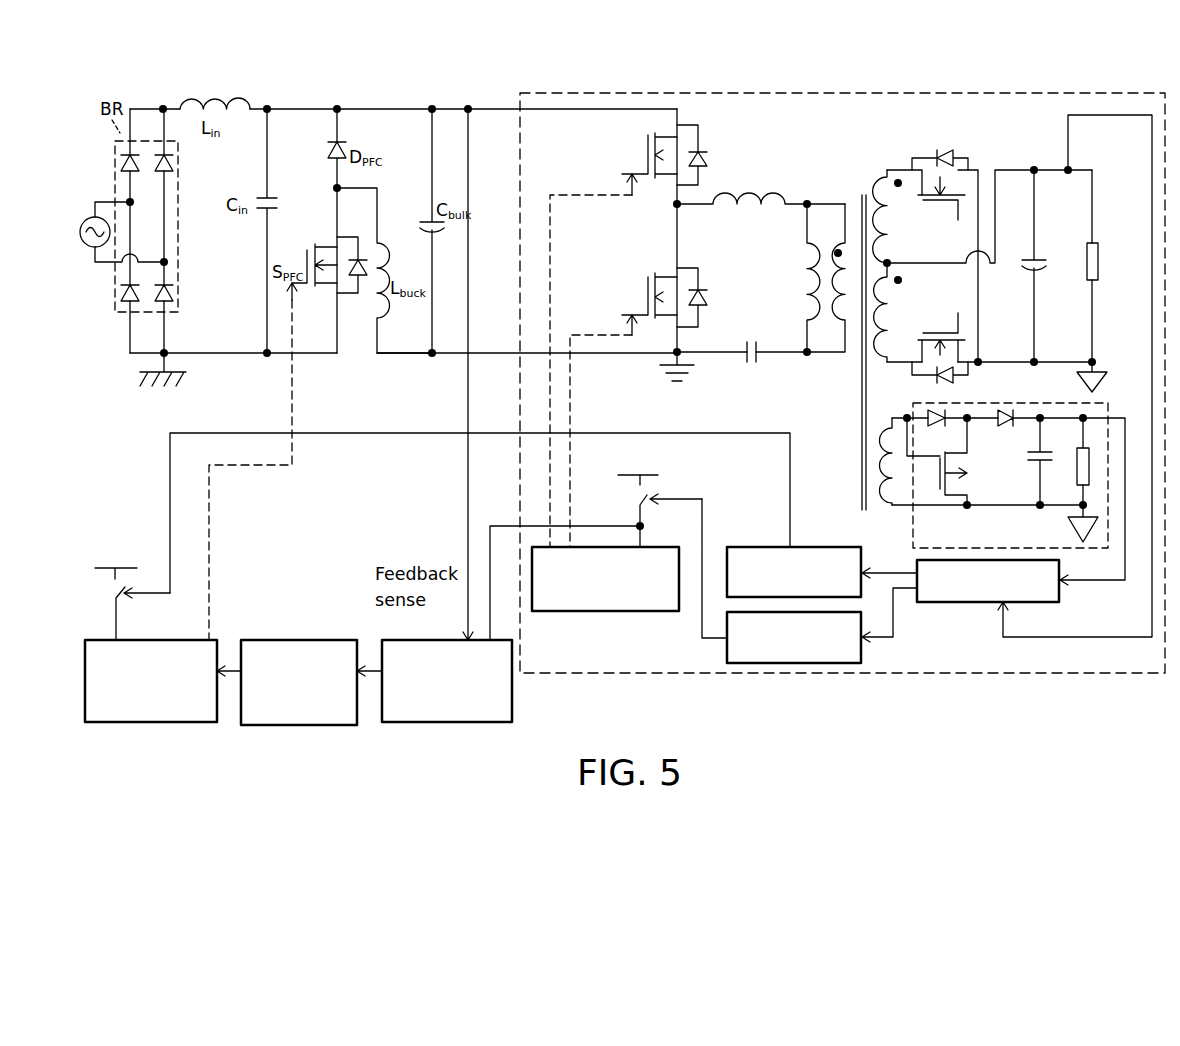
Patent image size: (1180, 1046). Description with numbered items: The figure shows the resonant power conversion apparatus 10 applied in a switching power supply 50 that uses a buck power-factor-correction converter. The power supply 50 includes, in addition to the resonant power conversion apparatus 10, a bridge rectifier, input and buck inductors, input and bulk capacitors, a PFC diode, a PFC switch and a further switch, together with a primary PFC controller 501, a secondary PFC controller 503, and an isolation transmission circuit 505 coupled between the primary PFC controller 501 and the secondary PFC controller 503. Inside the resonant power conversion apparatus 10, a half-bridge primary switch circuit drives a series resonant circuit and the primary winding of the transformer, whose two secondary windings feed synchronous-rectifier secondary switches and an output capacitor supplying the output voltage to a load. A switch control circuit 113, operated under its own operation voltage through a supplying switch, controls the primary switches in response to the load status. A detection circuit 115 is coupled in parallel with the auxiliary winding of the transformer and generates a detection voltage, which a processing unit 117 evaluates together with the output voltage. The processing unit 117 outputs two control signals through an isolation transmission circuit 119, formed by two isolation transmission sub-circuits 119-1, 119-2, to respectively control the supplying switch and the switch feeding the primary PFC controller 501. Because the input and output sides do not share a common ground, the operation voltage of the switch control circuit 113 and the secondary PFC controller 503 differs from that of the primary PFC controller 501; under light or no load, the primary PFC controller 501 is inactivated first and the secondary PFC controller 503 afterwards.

The resonant power conversion apparatus 10 is at (1003, 673).
The power supply 50 is at (140, 760).
The primary PFC controller 501 is at (193, 722).
The secondary PFC controller 503 is at (487, 722).
The isolation transmission circuit 505 is at (341, 725).
The switch control circuit 113 is at (637, 611).
The detection circuit 115 is at (973, 403).
The processing unit 117 is at (1060, 592).
The isolation transmission circuit 119 is at (826, 659).
The isolation transmission sub-circuit 119-1 is at (794, 572).
The isolation transmission sub-circuit 119-2 is at (794, 637).